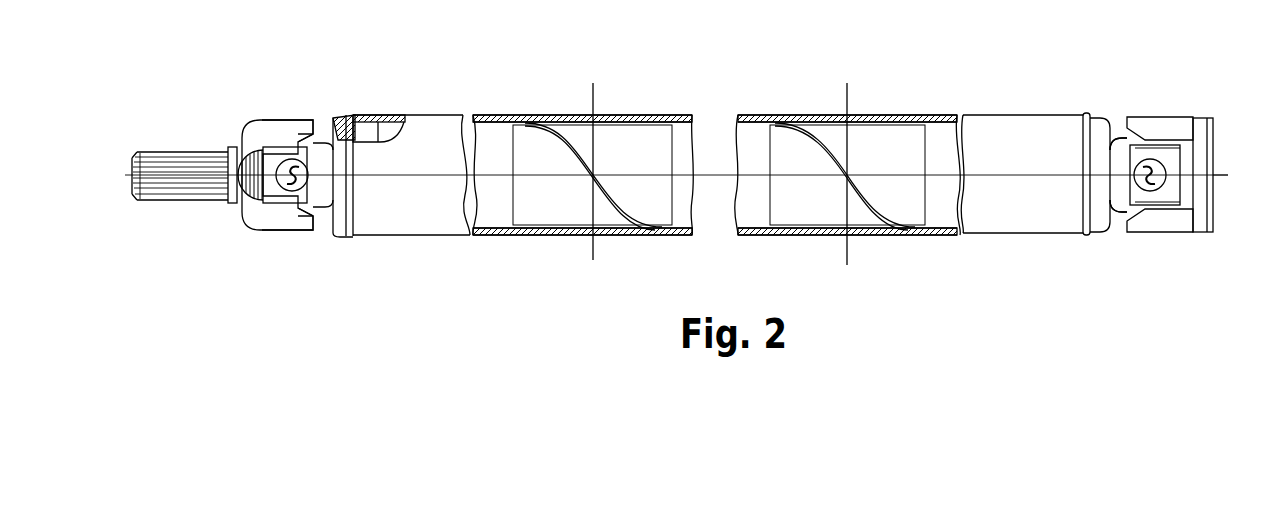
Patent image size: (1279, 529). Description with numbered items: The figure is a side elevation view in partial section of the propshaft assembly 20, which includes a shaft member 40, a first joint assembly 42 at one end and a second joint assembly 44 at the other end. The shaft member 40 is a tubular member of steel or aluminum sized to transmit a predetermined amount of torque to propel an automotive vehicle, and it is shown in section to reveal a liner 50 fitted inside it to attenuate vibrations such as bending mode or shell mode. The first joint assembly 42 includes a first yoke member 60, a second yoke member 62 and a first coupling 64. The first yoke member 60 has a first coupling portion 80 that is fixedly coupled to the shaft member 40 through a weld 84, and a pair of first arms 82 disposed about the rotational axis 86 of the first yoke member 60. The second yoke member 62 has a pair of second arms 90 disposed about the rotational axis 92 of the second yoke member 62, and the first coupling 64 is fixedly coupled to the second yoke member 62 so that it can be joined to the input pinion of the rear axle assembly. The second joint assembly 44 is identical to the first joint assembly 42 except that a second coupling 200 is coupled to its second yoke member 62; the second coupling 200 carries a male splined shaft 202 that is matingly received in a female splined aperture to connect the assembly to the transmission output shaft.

The propshaft assembly 20 is at (577, 56).
The shaft member 40 is at (765, 115).
The first joint assembly 42 is at (1115, 224).
The second joint assembly 44 is at (275, 119).
The liner 50 is at (625, 126).
The first yoke member 60 is at (304, 119).
The second yoke member 62 is at (247, 224).
The first coupling 64 is at (1205, 220).
The first coupling portion 80 is at (1100, 120).
The first arms 82 is at (320, 196).
The weld 84 is at (333, 118).
The rotational axis 86 is at (1000, 172).
The second arms 90 is at (270, 227).
The rotational axis 92 is at (1222, 172).
The second coupling 200 is at (163, 156).
The male splined shaft 202 is at (153, 192).